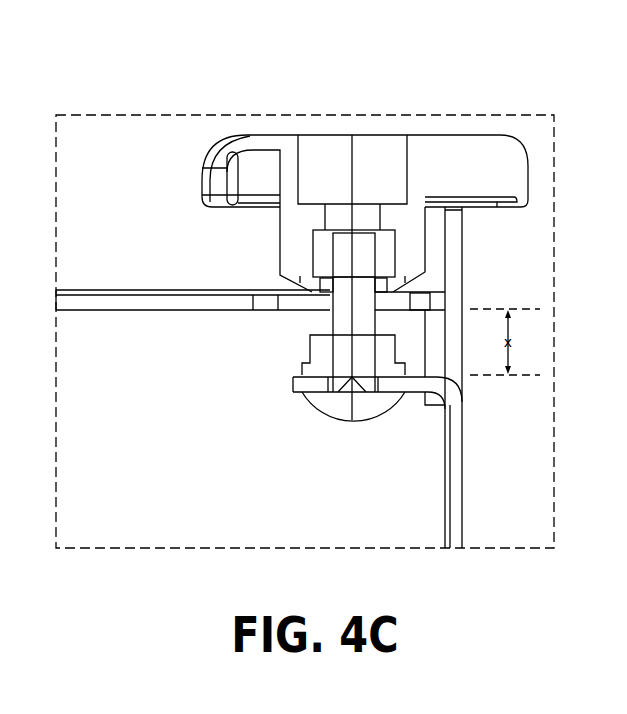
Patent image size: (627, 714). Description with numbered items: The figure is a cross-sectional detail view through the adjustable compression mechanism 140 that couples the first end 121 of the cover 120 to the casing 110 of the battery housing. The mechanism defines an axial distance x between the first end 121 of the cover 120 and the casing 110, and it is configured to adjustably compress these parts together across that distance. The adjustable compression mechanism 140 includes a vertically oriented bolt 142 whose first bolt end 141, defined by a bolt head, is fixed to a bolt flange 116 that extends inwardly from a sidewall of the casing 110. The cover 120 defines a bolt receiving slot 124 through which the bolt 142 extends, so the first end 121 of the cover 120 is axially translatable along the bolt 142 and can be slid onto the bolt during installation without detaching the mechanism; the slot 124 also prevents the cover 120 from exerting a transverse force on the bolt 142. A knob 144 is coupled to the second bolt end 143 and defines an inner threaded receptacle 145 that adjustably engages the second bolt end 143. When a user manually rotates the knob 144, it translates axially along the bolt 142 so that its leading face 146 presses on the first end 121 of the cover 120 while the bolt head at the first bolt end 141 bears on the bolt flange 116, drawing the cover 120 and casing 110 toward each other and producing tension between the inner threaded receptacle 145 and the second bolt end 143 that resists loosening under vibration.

The casing 110 is at (453, 492).
The bolt flange 116 is at (302, 382).
The cover 120 is at (83, 302).
The first end of the cover 121 is at (210, 250).
The bolt receiving slot 124 is at (303, 305).
The adjustable compression mechanism 140 is at (528, 150).
The first bolt end 141 is at (333, 408).
The bolt 142 is at (367, 300).
The second bolt end 143 is at (345, 250).
The knob 144 is at (312, 135).
The inner threaded receptacle 145 is at (325, 248).
The leading face of the knob 146 is at (315, 291).